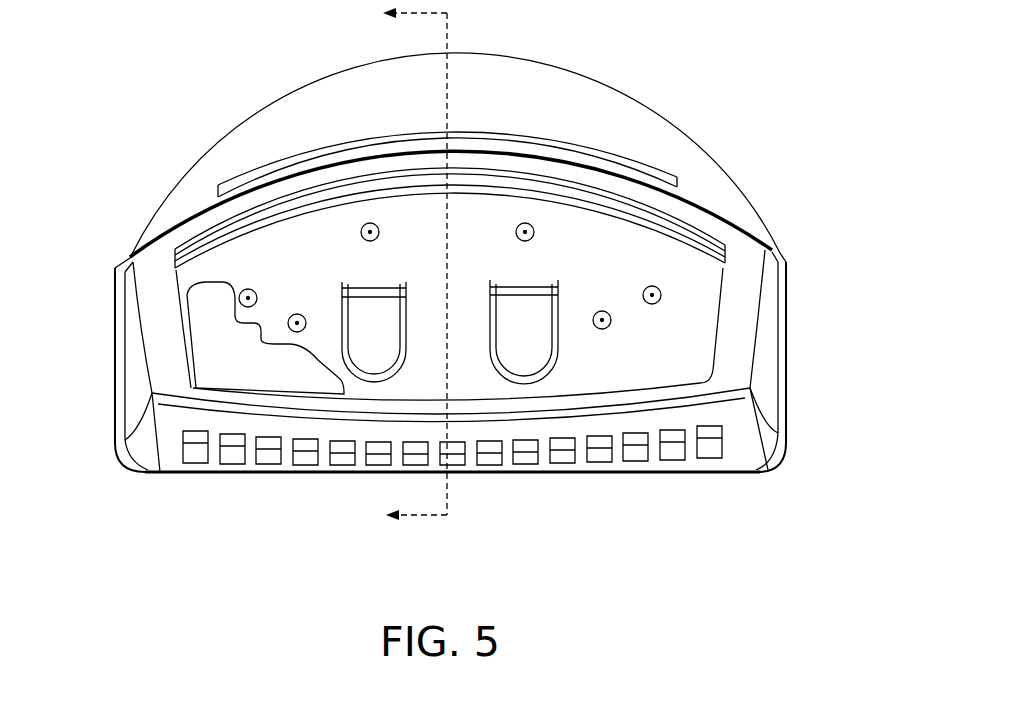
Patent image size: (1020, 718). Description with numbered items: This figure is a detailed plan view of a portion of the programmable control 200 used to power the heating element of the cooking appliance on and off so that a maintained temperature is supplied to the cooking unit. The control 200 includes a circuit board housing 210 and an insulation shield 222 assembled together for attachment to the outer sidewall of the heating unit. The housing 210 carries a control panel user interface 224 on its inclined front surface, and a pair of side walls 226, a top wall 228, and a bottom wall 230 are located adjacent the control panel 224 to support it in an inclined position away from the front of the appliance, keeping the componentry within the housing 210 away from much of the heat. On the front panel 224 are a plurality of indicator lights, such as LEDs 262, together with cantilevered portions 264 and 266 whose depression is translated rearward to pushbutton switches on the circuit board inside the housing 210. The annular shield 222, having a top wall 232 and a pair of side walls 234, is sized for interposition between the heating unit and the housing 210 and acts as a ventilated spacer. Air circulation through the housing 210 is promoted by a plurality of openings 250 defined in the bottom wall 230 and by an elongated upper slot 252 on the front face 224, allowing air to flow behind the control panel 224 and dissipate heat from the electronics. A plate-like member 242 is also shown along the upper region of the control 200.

The programmable control 200 is at (852, 208).
The circuit board housing 210 is at (745, 325).
The insulation shield 222 is at (645, 125).
The control panel user interface 224 is at (702, 285).
The side walls 226 is at (138, 383).
The top wall 228 is at (718, 208).
The bottom wall 230 is at (737, 443).
The top wall 232 is at (596, 98).
The side walls 234 is at (115, 310).
The top plate 242 is at (310, 150).
The openings 250 is at (598, 452).
The elongated upper slot 252 is at (673, 227).
The LEDs 262 is at (257, 290).
The cantilevered portion 264 is at (360, 363).
The cantilevered portion 266 is at (525, 363).